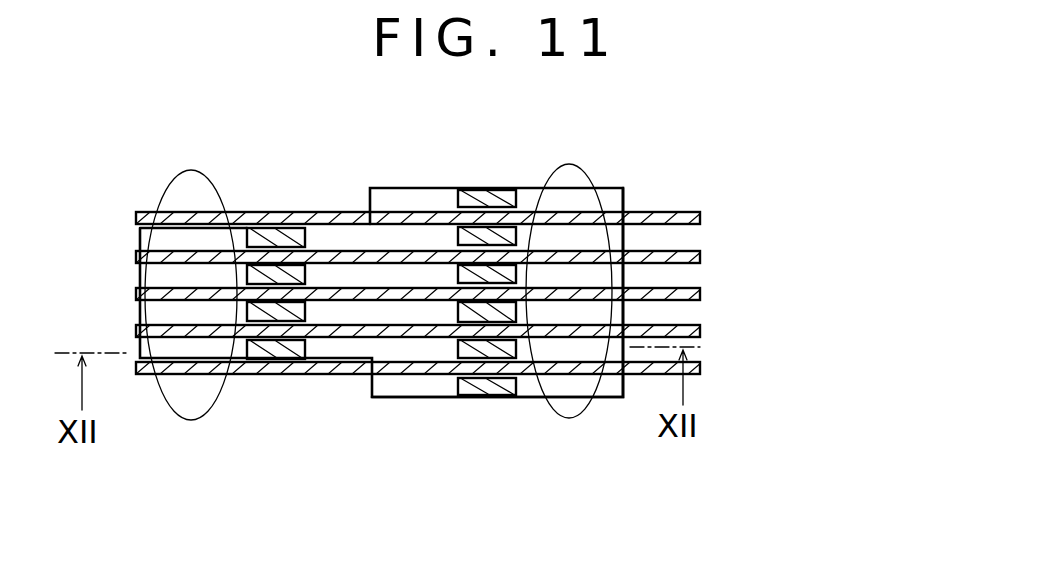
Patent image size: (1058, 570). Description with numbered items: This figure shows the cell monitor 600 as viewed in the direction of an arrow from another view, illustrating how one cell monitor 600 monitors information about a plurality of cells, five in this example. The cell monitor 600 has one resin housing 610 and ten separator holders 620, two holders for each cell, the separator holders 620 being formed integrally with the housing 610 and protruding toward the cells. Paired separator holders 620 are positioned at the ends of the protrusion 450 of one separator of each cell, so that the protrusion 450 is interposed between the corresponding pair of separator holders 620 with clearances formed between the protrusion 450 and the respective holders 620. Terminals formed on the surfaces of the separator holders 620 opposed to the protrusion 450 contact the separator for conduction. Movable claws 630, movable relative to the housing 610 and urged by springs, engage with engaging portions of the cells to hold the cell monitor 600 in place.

The separator protrusion 450 is at (433, 293).
The cell monitor 600 is at (623, 188).
The resin housing 610 is at (392, 188).
The separator holders 620 is at (273, 350).
The movable claws 630 is at (195, 420).